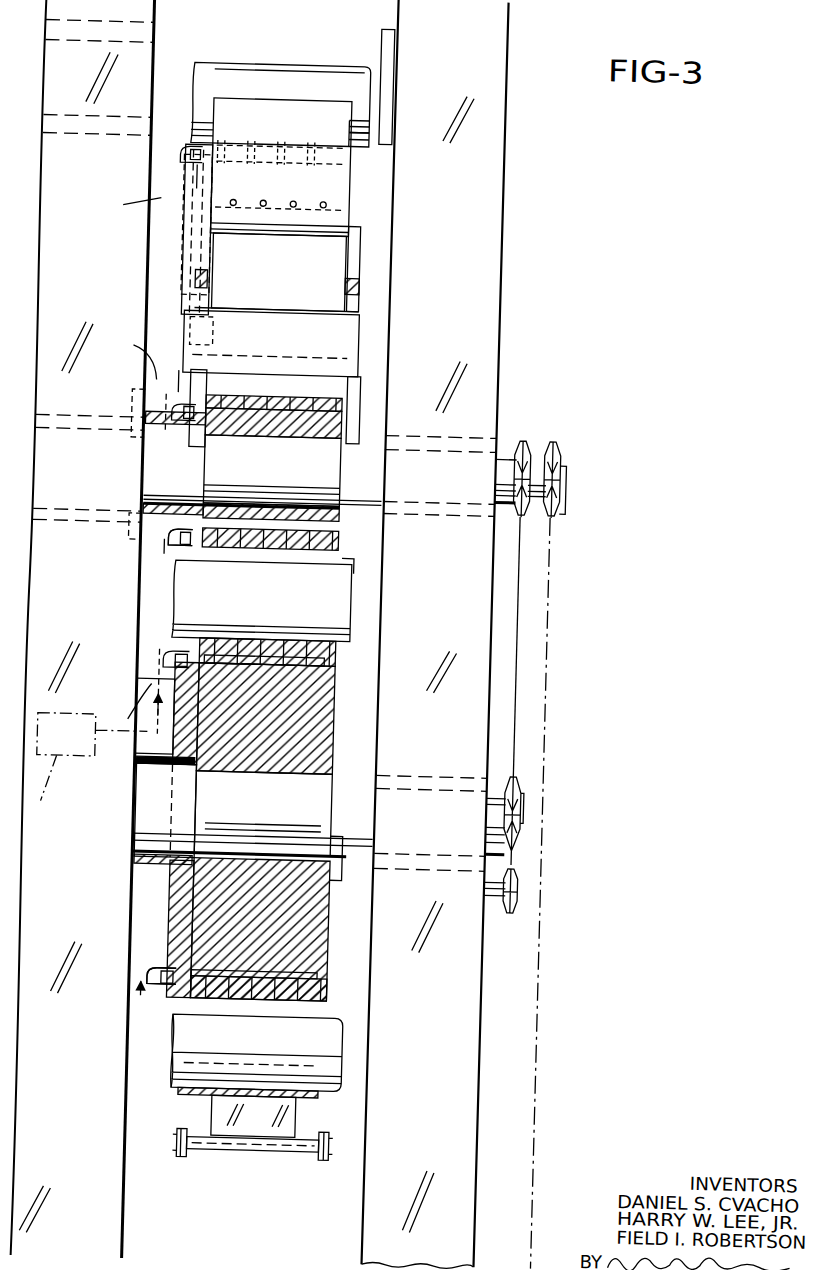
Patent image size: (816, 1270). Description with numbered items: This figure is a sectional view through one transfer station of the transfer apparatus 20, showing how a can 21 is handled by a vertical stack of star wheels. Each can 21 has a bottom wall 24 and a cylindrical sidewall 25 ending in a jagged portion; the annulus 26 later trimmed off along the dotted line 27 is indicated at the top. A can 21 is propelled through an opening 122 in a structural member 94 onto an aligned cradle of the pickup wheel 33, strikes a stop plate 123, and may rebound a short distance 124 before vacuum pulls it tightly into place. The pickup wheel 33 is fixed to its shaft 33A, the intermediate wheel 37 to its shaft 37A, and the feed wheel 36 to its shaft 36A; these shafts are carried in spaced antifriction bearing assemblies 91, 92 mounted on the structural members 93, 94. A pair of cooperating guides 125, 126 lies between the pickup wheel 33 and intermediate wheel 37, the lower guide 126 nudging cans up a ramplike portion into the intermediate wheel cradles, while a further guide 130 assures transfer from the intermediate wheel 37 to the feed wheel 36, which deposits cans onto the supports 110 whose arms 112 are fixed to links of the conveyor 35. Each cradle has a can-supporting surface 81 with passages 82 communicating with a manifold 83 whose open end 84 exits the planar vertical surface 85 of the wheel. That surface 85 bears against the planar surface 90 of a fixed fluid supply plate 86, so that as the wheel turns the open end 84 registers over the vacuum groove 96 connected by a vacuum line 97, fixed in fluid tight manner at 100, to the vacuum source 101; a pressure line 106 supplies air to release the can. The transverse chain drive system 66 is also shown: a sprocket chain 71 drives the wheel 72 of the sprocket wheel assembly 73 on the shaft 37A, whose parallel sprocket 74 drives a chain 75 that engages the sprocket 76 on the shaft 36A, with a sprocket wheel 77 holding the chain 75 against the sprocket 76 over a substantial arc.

The transfer apparatus 20 is at (597, 199).
The can 21 is at (259, 76).
The bottom wall 24 is at (358, 98).
The cylindrical sidewall 25 is at (313, 72).
The annulus 26 is at (181, 1064).
The dotted line 27 is at (185, 1108).
The pickup wheel 33 is at (340, 272).
The pickup wheel shaft 33A is at (352, 242).
The conveyor 35 is at (328, 1166).
The feed wheel 36 is at (338, 742).
The feed wheel shaft 36A is at (303, 813).
The intermediate wheel 37 is at (338, 432).
The intermediate wheel shaft 37A is at (304, 474).
The transverse chain drive system 66 is at (619, 636).
The sprocket chain 71 is at (549, 1056).
The sprocket wheel 72 is at (557, 456).
The sprocket wheel assembly 73 is at (556, 392).
The sprocket 74 is at (515, 440).
The chain 75 is at (520, 746).
The sprocket 76 is at (526, 788).
The sprocket wheel 77 is at (522, 910).
The can-supporting surface 81 is at (346, 374).
The passages 82 is at (276, 152).
The manifold 83 is at (330, 162).
The open end 84 is at (243, 643).
The planar vertical surface 85 is at (200, 206).
The fluid supply plate 86 is at (200, 246).
The planar surface 90 is at (200, 282).
The antifriction bearing assembly 91 is at (470, 436).
The antifriction bearing assembly 92 is at (74, 424).
The structural member 93 is at (480, 282).
The structural member 94 is at (82, 185).
The vacuum groove 96 is at (176, 158).
The vacuum line 97 is at (170, 160).
The fluid tight connection 100 is at (126, 440).
The vacuum source 101 is at (90, 773).
The pressure line 106 is at (166, 546).
The support 110 is at (330, 1106).
The arm 112 is at (300, 1118).
The opening 122 is at (124, 50).
The stop plate 123 is at (374, 56).
The rebound distance 124 is at (358, 126).
The upper guide 125 is at (199, 286).
The lower guide 126 is at (192, 378).
The guide 130 is at (340, 552).